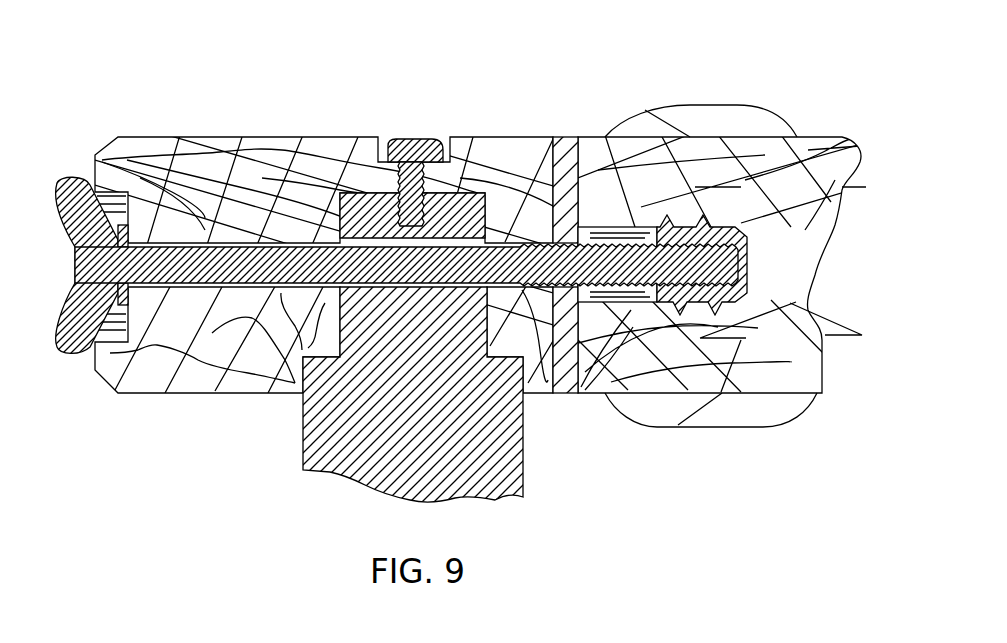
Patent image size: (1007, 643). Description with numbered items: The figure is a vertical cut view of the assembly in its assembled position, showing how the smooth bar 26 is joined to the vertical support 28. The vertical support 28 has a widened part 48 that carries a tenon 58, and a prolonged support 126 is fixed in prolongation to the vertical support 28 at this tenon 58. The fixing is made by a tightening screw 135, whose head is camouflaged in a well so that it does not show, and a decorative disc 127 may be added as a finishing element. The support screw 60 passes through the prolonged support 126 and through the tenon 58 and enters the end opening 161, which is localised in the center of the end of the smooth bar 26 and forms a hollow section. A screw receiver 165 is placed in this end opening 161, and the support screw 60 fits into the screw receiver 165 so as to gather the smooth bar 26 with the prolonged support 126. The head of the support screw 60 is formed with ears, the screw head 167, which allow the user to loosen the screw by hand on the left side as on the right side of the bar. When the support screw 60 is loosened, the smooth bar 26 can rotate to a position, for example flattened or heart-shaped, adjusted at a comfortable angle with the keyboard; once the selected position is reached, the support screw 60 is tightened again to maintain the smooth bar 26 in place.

The smooth bar 26 is at (828, 150).
The vertical support 28 is at (303, 437).
The widened part 48 is at (513, 456).
The tenon 58 is at (460, 193).
The support screw 60 is at (177, 253).
The prolonged support 126 is at (277, 137).
The decorative disc 127 is at (560, 137).
The tightening screw 135 is at (395, 137).
The end opening 161 is at (590, 150).
The screw receiver 165 is at (826, 259).
The screw head 167 is at (57, 175).